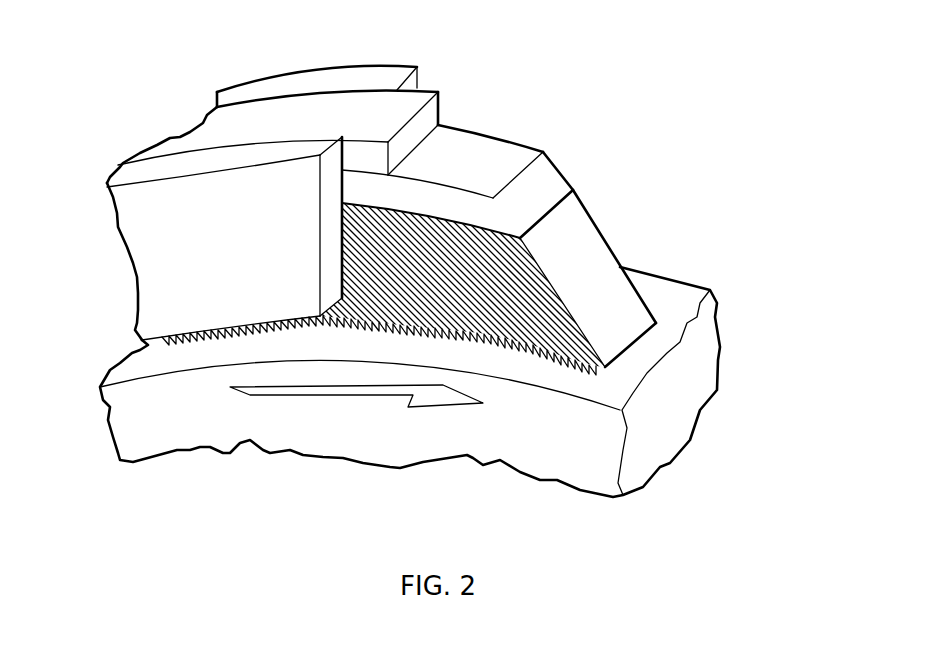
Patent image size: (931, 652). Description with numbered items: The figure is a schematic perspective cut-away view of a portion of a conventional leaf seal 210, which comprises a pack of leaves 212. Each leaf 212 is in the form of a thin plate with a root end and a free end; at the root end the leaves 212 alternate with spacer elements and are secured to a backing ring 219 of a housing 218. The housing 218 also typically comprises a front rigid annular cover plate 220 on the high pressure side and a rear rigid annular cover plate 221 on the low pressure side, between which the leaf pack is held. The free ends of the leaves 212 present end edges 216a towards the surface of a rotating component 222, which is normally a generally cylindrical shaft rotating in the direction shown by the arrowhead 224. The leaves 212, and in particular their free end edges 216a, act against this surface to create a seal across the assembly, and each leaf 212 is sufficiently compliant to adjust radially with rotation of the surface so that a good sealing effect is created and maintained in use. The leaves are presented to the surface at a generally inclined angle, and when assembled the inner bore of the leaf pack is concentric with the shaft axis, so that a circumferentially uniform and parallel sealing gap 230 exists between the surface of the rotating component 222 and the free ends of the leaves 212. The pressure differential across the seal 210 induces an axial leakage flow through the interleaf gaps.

The leaf seal 210 is at (482, 97).
The leaves 212 is at (582, 252).
The end edges 216a is at (637, 338).
The housing 218 is at (228, 82).
The backing ring 219 is at (217, 127).
The front rigid annular cover plate 220 is at (167, 245).
The rear rigid annular cover plate 221 is at (308, 80).
The rotating component 222 is at (557, 383).
The arrowhead 224 is at (302, 388).
The sealing gap 230 is at (590, 372).